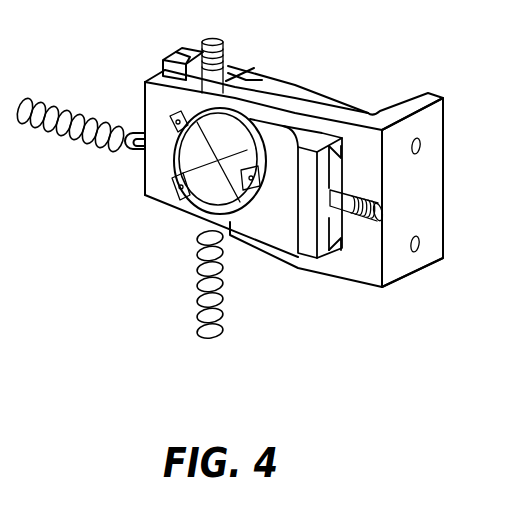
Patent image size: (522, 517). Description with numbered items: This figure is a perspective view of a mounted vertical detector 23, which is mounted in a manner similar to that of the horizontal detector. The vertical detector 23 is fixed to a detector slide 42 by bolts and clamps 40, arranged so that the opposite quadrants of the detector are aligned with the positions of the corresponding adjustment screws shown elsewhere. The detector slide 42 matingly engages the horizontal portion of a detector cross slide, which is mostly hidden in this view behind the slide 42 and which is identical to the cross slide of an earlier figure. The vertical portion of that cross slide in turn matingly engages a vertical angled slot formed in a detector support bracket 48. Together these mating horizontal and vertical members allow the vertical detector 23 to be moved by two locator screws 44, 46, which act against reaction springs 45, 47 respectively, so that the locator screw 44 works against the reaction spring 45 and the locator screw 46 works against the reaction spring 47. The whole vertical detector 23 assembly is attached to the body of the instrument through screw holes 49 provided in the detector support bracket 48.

The vertical detector 23 is at (182, 150).
The bolts and clamps 40 is at (173, 115).
The detector slide 42 is at (307, 256).
The locator screw 44 is at (350, 189).
The reaction spring 45 is at (68, 108).
The locator screw 46 is at (226, 40).
The reaction spring 47 is at (222, 323).
The detector support bracket 48 is at (410, 277).
The screw holes 49 is at (422, 146).